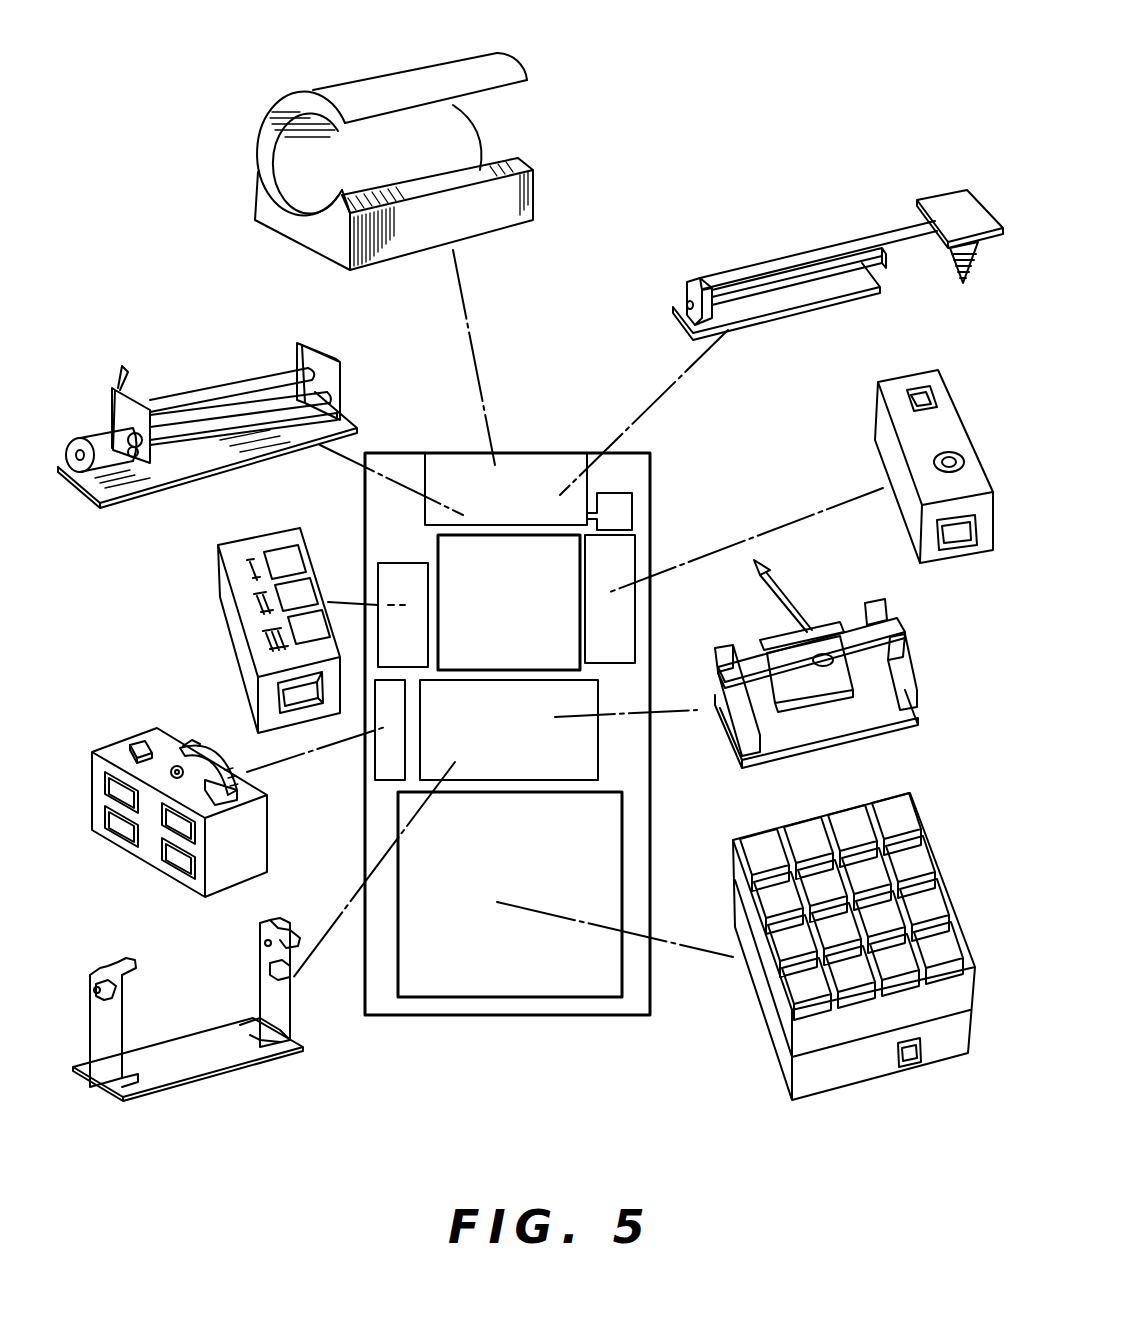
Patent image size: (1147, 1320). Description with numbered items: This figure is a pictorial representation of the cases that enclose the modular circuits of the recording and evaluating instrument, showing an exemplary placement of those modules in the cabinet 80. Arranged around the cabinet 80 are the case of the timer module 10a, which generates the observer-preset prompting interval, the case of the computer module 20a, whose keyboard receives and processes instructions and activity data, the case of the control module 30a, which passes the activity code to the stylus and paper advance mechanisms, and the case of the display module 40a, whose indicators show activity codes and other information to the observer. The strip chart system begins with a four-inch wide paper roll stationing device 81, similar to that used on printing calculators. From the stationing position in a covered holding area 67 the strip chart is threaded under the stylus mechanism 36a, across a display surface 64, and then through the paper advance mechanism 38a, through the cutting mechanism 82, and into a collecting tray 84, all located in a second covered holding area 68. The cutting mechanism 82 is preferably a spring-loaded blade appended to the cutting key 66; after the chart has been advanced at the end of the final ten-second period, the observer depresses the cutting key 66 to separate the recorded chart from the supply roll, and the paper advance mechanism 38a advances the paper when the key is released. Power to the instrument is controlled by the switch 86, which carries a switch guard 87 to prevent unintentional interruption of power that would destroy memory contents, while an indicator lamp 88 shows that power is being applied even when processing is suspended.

The timer module case 10a is at (985, 338).
The computer module case 20a is at (870, 1075).
The control module case 30a is at (342, 871).
The stylus mechanism 36a is at (982, 610).
The paper advance mechanism 38a is at (418, 365).
The display module case 40a is at (237, 637).
The display surface 64 is at (530, 598).
The cutting key 66 is at (958, 193).
The covered holding area 67 is at (524, 728).
The covered holding area 68 is at (535, 503).
The cabinet 80 is at (557, 1017).
The paper roll stationing device 81 is at (303, 1053).
The cutting mechanism 82 is at (822, 237).
The collecting tray 84 is at (537, 195).
The switch 86 is at (100, 752).
The switch guard 87 is at (233, 752).
The indicator lamp 88 is at (142, 743).